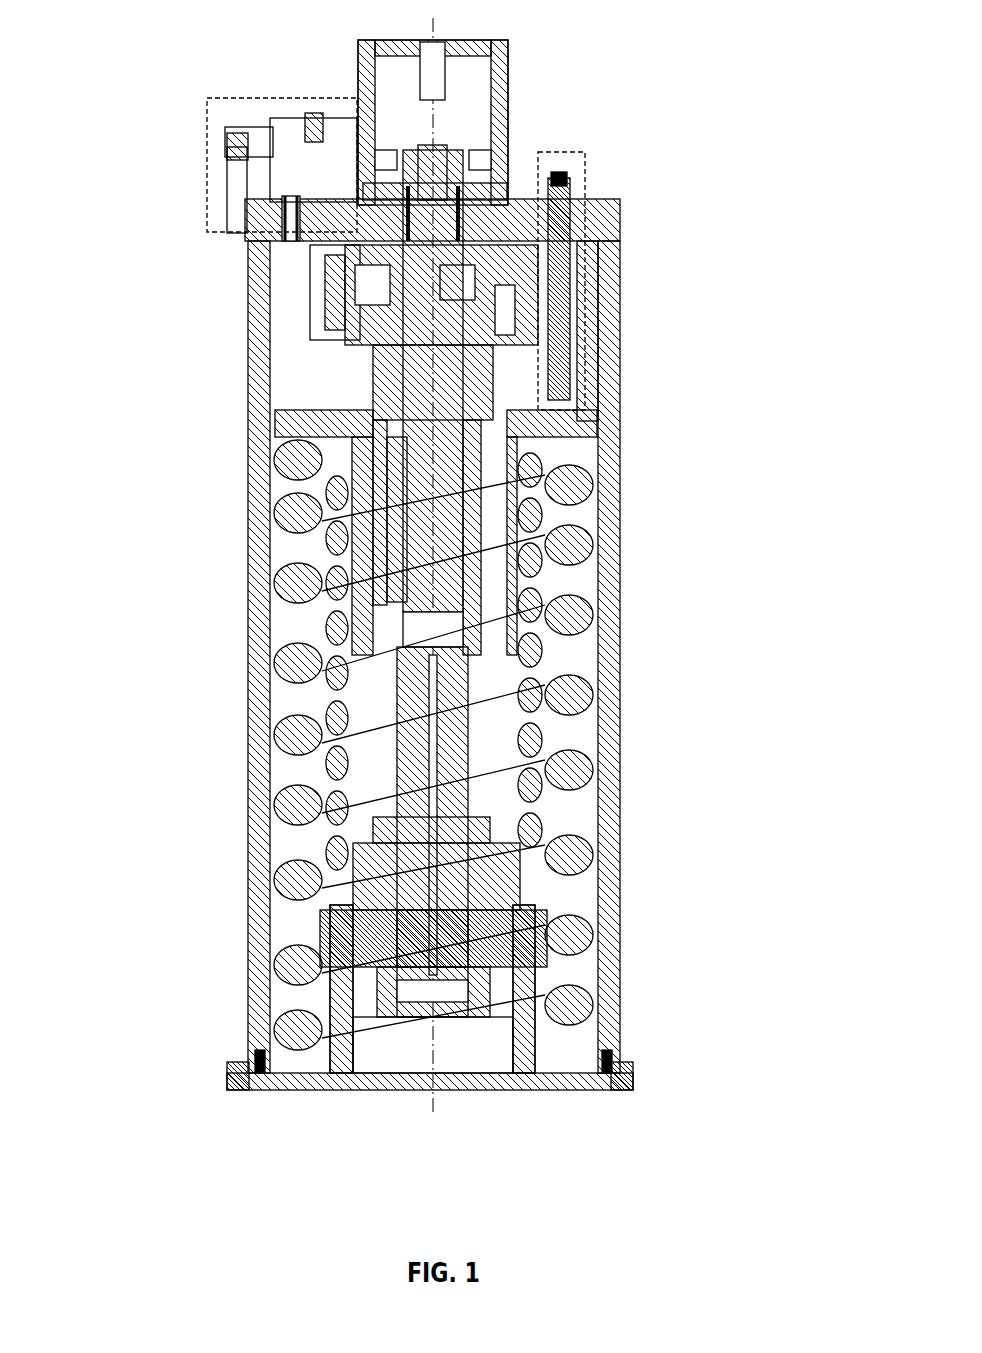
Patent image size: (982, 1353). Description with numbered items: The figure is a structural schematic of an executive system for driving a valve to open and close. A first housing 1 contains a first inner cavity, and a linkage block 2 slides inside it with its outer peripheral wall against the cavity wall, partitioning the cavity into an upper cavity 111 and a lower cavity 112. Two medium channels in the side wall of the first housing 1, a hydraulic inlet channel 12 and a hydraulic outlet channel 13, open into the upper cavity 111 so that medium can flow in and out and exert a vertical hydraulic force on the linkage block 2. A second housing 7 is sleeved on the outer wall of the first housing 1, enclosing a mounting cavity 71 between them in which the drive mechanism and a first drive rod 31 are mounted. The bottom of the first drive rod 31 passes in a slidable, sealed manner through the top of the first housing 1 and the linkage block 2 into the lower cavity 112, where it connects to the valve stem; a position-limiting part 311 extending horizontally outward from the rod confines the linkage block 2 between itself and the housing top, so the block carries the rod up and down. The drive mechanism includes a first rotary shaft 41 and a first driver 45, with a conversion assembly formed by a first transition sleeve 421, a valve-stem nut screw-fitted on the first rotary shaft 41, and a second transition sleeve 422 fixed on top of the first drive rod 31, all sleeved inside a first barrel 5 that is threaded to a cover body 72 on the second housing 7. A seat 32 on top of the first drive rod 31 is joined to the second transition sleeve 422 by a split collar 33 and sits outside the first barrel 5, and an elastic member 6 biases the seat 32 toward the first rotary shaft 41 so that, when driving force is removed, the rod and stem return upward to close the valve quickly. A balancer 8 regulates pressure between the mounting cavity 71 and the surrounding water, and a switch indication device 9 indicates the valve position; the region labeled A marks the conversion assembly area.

The first housing 1 is at (292, 1086).
The upper cavity 111 is at (540, 950).
The lower cavity 112 is at (460, 1047).
The hydraulic inlet channel 12 is at (262, 1060).
The hydraulic outlet channel 13 is at (590, 1082).
The linkage block 2 is at (278, 870).
The first drive rod 31 is at (460, 820).
The position-limiting part 311 is at (375, 935).
The seat 32 is at (510, 527).
The split collar 33 is at (483, 637).
The first rotary shaft 41 is at (410, 382).
The first transition sleeve 421 is at (388, 432).
The second transition sleeve 422 is at (383, 513).
The first driver 45 is at (508, 95).
The first barrel 5 is at (600, 457).
The elastic member 6 is at (540, 647).
The second housing 7 is at (617, 347).
The mounting cavity 71 is at (290, 637).
The cover body 72 is at (583, 265).
The balancer 8 is at (245, 233).
The switch indication device 9 is at (795, 96).
The valve assembly A is at (308, 317).